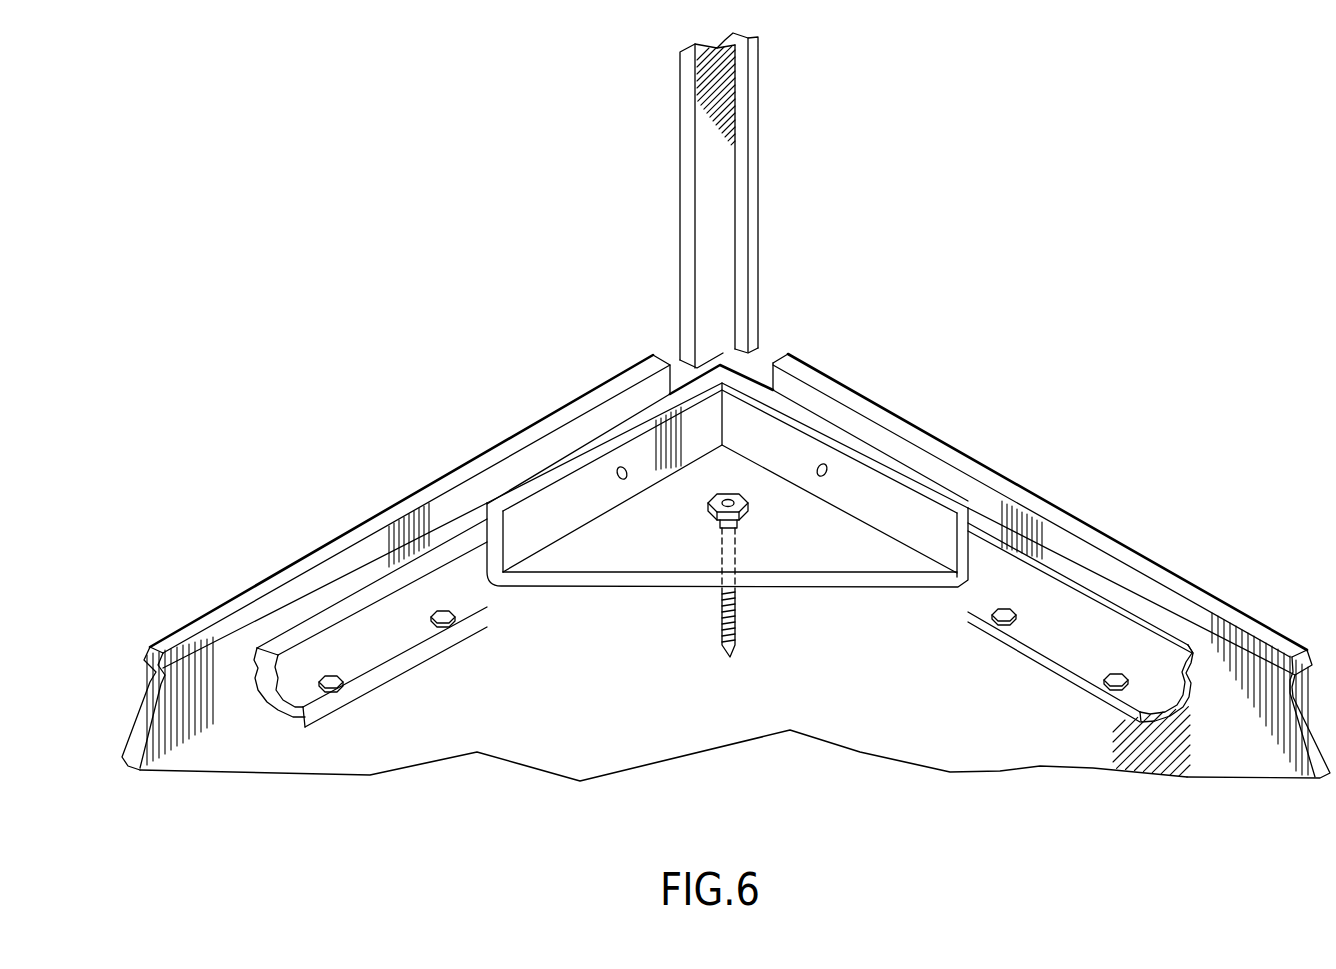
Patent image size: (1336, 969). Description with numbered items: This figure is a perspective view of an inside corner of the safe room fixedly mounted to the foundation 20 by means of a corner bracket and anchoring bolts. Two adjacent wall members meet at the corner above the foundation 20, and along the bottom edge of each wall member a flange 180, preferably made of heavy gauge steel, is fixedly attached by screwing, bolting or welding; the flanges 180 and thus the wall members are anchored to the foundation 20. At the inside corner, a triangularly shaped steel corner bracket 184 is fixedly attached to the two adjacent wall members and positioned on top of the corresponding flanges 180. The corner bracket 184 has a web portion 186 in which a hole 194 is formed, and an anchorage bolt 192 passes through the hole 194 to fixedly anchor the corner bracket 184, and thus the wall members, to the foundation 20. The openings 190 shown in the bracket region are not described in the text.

The foundation 20 is at (1028, 735).
The flange 180 is at (400, 645).
The corner bracket 184 is at (800, 584).
The web portion 186 is at (855, 553).
The hole 190 is at (621, 466).
The anchorage bolt 192 is at (723, 613).
The hole 194 is at (738, 490).